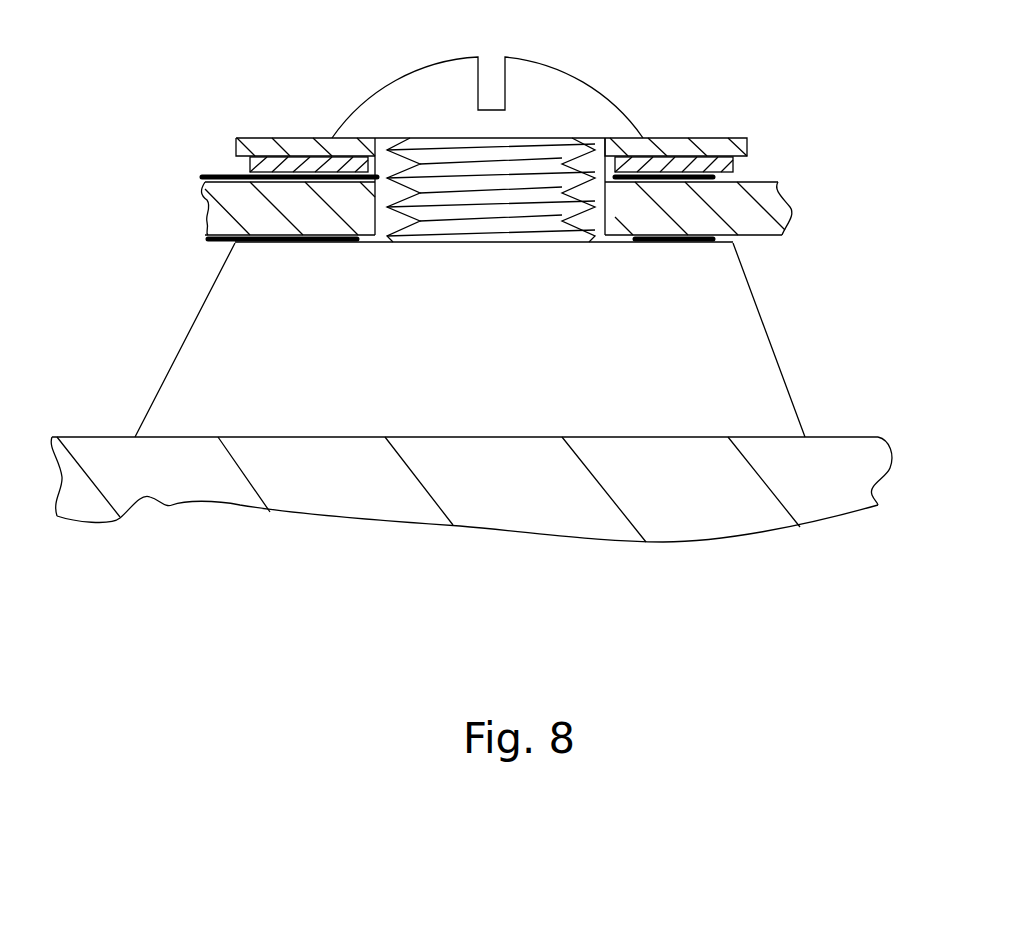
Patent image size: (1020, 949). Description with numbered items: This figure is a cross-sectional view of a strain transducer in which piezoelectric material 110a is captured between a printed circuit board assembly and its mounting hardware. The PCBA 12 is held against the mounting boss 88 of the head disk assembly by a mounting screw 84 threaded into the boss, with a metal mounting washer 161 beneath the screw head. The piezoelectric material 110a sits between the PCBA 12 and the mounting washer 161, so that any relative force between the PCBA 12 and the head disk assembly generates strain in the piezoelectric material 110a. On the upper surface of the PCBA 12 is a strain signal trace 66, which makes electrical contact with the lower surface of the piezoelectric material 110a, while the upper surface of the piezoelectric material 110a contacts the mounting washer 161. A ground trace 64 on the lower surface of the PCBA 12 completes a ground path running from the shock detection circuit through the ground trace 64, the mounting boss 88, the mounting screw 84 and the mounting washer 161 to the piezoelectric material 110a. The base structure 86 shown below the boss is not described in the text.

The mounting screw 84 is at (433, 68).
The mounting washer 161 is at (705, 138).
The piezoelectric material 110a is at (733, 163).
The strain signal trace 66 is at (205, 177).
The ground trace 64 is at (218, 243).
The PCBA 12 is at (792, 222).
The mounting boss 88 is at (790, 383).
The base plate 86 is at (84, 437).